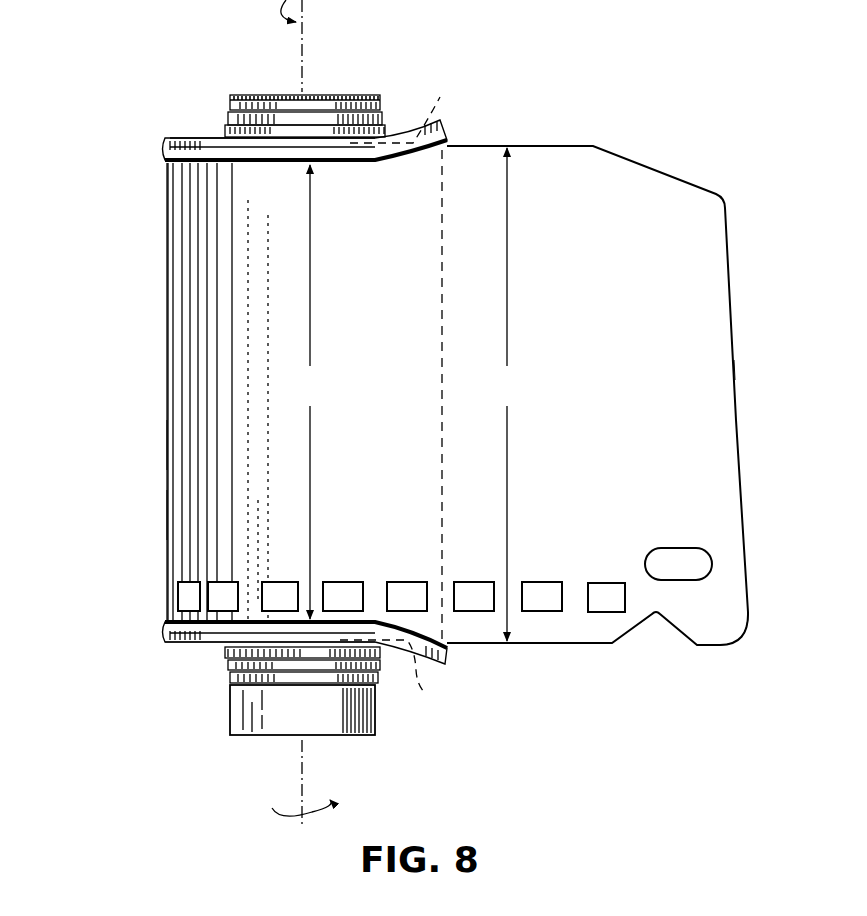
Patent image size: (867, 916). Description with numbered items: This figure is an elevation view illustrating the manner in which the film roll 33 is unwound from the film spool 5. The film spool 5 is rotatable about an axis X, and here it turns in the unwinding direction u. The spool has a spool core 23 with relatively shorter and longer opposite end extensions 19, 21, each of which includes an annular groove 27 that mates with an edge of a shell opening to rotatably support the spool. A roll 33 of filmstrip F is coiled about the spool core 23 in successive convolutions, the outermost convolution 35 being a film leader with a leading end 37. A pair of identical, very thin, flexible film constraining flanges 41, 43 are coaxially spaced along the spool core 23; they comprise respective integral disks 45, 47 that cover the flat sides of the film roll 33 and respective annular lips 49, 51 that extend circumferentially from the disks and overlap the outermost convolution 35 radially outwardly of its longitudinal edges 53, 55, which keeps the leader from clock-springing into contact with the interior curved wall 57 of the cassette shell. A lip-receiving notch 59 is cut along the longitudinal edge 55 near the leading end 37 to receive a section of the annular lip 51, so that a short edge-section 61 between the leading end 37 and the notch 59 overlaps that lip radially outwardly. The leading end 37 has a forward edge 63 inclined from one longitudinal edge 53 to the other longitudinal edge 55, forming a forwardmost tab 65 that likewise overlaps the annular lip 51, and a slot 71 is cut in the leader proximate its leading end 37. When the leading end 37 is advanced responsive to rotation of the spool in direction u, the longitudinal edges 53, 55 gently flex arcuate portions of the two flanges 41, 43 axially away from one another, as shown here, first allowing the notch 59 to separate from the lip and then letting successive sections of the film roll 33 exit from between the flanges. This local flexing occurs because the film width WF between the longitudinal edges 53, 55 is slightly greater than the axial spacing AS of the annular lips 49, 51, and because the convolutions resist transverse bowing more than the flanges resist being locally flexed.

The film spool 5 is at (164, 512).
The shorter end extension 19 is at (374, 112).
The longer end extension 21 is at (250, 713).
The spool core 23 is at (226, 93).
The annular groove 27 is at (380, 128).
The film roll 33 is at (164, 453).
The outermost convolution 35 is at (167, 362).
The leading end 37 is at (700, 342).
The upper film constraining flange 41 is at (160, 142).
The lower film constraining flange 43 is at (160, 644).
The disk 45 is at (195, 136).
The disk 47 is at (187, 650).
The annular lip 49 is at (162, 150).
The annular lip 51 is at (163, 632).
The longitudinal edge 53 is at (490, 94).
The longitudinal edge 55 is at (422, 690).
The interior curved wall 57 is at (401, 597).
The lip-receiving notch 59 is at (652, 620).
The edge-section 61 is at (712, 648).
The forward edge 63 is at (734, 374).
The forwardmost tab 65 is at (735, 622).
The slot 71 is at (676, 553).
The filmstrip F is at (205, 225).
The axis X is at (308, 2).
The unwinding direction u is at (318, 806).
The axial spacing AS is at (305, 392).
The film width WF is at (501, 394).